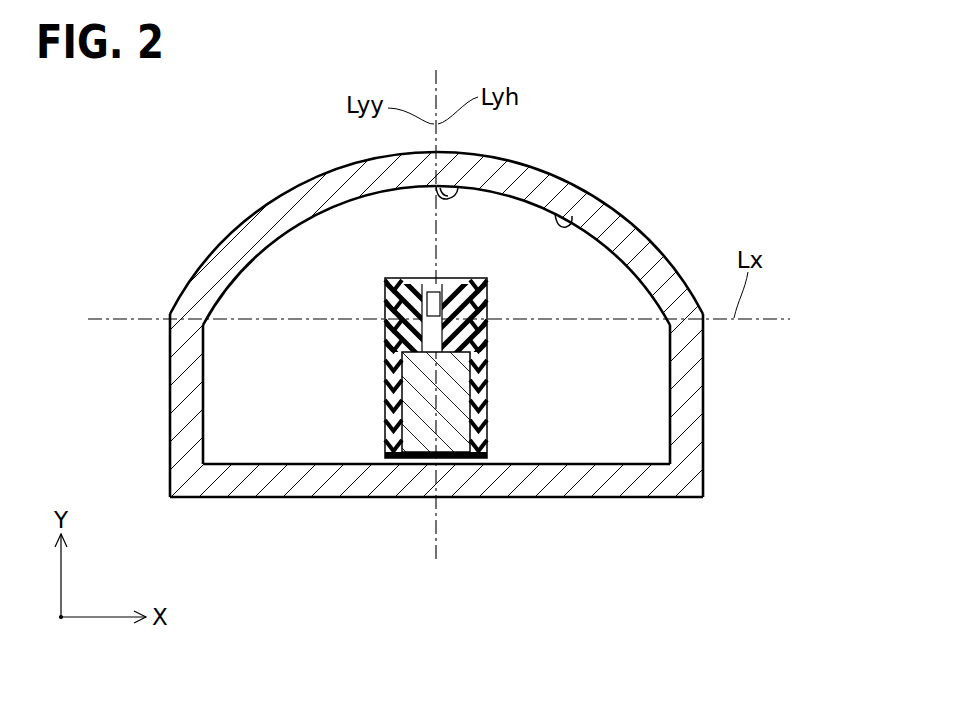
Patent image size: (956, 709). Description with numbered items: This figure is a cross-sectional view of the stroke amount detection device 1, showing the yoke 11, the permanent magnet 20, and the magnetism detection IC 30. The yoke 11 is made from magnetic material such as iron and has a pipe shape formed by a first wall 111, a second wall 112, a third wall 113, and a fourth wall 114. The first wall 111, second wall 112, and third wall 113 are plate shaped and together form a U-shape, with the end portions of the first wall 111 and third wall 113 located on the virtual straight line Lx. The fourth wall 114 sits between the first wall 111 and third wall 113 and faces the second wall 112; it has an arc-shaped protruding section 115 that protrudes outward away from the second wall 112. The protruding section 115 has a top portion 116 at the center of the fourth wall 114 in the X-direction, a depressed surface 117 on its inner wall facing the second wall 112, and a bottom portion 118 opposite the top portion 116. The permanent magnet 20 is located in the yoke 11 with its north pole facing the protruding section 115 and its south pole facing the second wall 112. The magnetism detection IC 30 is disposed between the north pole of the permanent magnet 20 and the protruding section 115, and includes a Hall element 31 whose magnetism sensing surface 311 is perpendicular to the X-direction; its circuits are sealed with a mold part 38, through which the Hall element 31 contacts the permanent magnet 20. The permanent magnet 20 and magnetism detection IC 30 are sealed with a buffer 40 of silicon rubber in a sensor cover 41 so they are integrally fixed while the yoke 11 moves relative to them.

The stroke amount detection device 1 is at (784, 591).
The yoke 11 is at (478, 327).
The first wall 111 is at (185, 392).
The second wall 112 is at (513, 492).
The third wall 113 is at (698, 406).
The fourth wall 114 is at (203, 277).
The protruding section 115 is at (546, 185).
The top portion 116 is at (438, 152).
The depressed surface 117 is at (567, 214).
The bottom portion 118 is at (445, 186).
The permanent magnet 20 is at (410, 424).
The magnetism detection IC 30 is at (431, 338).
The Hall element 31 is at (507, 365).
The magnetism sensing surface 311 is at (476, 326).
The mold part 38 is at (396, 349).
The buffer 40 is at (400, 305).
The sensor cover 41 is at (402, 321).